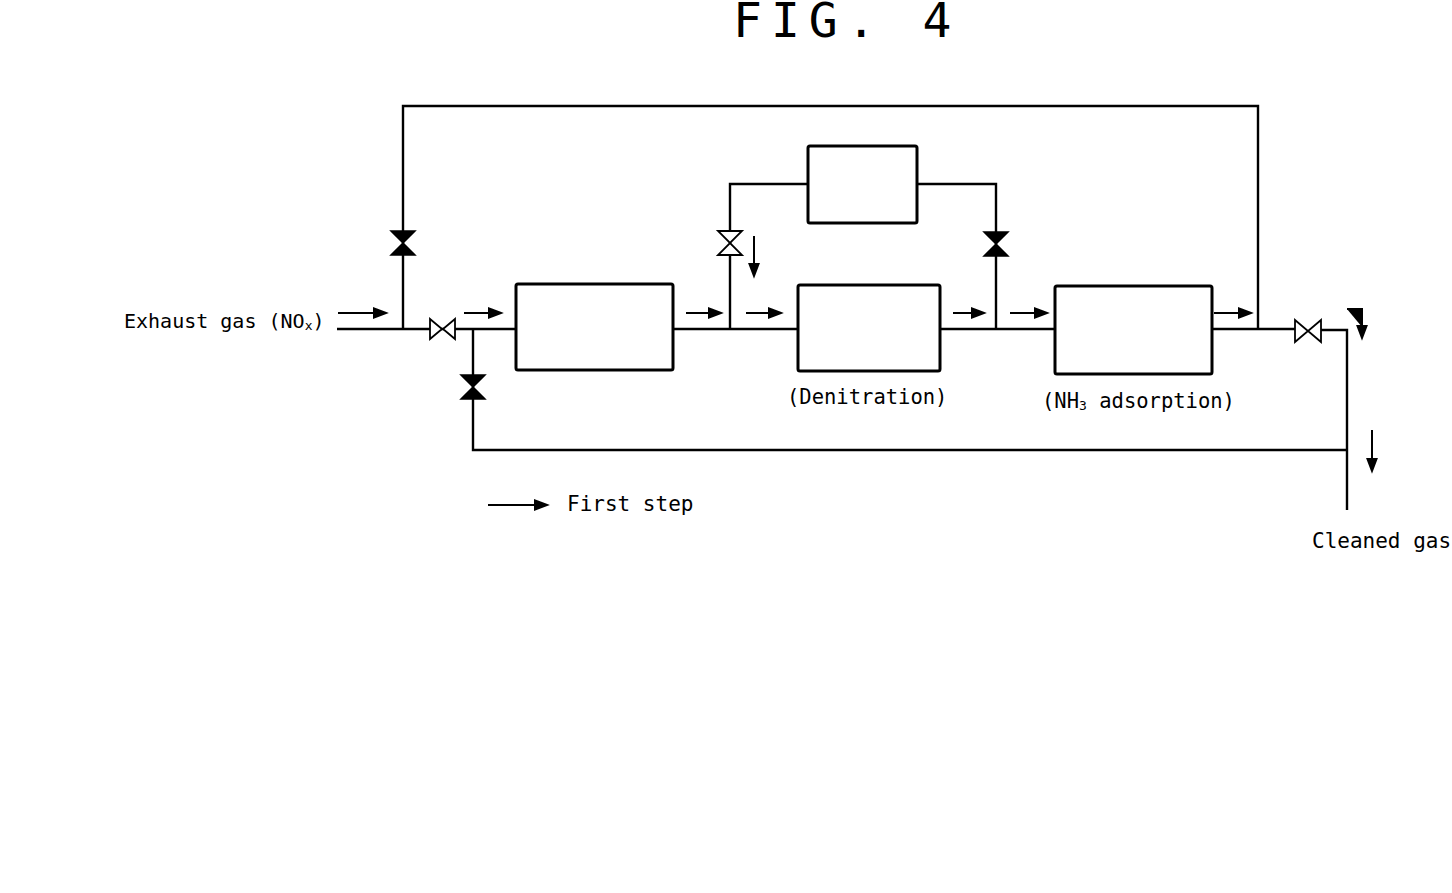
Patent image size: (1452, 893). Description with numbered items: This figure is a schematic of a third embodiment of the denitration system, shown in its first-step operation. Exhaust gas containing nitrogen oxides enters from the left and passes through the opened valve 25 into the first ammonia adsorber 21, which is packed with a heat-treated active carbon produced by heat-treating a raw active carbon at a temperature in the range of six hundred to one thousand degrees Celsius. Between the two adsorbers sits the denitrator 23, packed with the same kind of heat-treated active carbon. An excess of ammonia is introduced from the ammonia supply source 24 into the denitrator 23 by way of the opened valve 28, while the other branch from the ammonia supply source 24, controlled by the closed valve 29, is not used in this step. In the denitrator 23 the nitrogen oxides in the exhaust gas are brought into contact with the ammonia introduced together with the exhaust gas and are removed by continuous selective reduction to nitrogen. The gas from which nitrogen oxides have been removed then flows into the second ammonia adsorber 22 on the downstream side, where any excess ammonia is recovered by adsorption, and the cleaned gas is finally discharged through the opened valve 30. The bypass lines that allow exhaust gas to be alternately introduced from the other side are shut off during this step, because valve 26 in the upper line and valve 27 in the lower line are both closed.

The first ammonia adsorber 21 is at (588, 284).
The second ammonia adsorber 22 is at (1133, 286).
The denitrator 23 is at (868, 285).
The ammonia supply source 24 is at (898, 146).
The valve 25 is at (445, 318).
The valve 26 is at (417, 247).
The valve 27 is at (462, 387).
The valve 28 is at (722, 240).
The valve 29 is at (1005, 248).
The valve 30 is at (1305, 319).